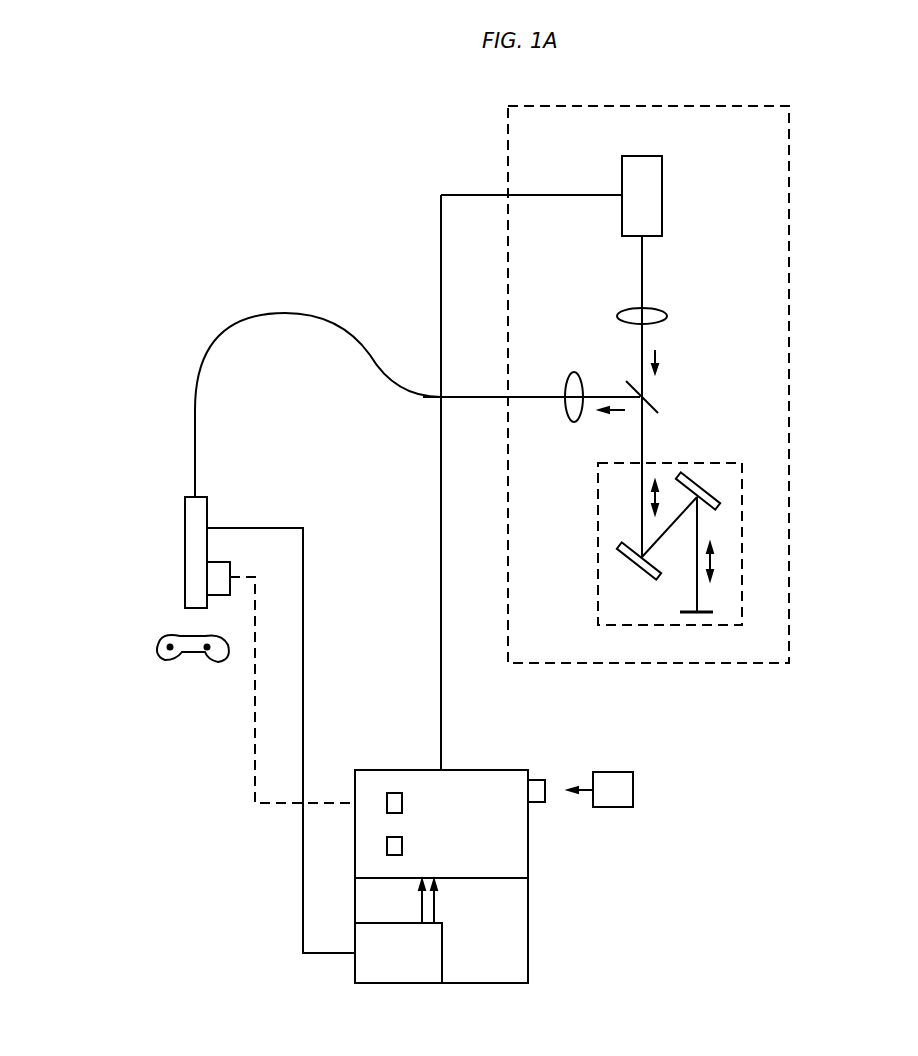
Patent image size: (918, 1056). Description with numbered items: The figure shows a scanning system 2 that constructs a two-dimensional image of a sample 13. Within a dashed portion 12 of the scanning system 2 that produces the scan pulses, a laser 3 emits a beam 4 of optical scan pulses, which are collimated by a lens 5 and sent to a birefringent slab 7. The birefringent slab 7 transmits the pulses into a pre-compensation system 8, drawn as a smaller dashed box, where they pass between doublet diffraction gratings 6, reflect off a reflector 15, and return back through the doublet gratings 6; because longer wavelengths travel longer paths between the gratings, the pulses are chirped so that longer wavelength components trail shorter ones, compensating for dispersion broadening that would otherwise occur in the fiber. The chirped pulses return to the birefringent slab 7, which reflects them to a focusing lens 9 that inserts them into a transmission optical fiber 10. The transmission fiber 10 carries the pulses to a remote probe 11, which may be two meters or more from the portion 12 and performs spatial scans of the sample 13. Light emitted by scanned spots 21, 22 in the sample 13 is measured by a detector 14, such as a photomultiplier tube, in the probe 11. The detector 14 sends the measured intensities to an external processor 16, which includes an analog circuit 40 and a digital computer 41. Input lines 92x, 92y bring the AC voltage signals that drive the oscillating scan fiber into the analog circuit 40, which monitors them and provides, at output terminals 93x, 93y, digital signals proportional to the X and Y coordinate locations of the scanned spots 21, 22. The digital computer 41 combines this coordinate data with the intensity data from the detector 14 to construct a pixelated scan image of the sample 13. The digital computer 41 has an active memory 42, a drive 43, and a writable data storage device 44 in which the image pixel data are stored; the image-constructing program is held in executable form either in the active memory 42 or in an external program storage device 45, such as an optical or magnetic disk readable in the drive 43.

The scanning system 2 is at (234, 188).
The laser 3 is at (662, 162).
The beam 4 is at (642, 280).
The lens 5 is at (665, 312).
The doublet diffraction gratings 6 is at (718, 493).
The birefringent slab 7 is at (658, 402).
The pre-compensation system 8 is at (588, 615).
The focusing lens 9 is at (578, 376).
The transmission optical fiber 10 is at (340, 332).
The probe 11 is at (207, 503).
The portion of scanning system 12 is at (789, 106).
The sample 13 is at (149, 663).
The detector 14 is at (230, 567).
The reflector 15 is at (690, 614).
The processor 16 is at (470, 887).
The spot 21 is at (170, 650).
The spot 22 is at (207, 650).
The analog circuit 40 is at (408, 966).
The digital computer 41 is at (444, 823).
The active memory 42 is at (402, 845).
The drive 43 is at (545, 785).
The writable data storage device 44 is at (402, 800).
The external program storage device 45 is at (603, 807).
The input line 92x is at (308, 732).
The input line 92y is at (303, 528).
The output terminal 93x is at (420, 905).
The output terminal 93y is at (436, 905).